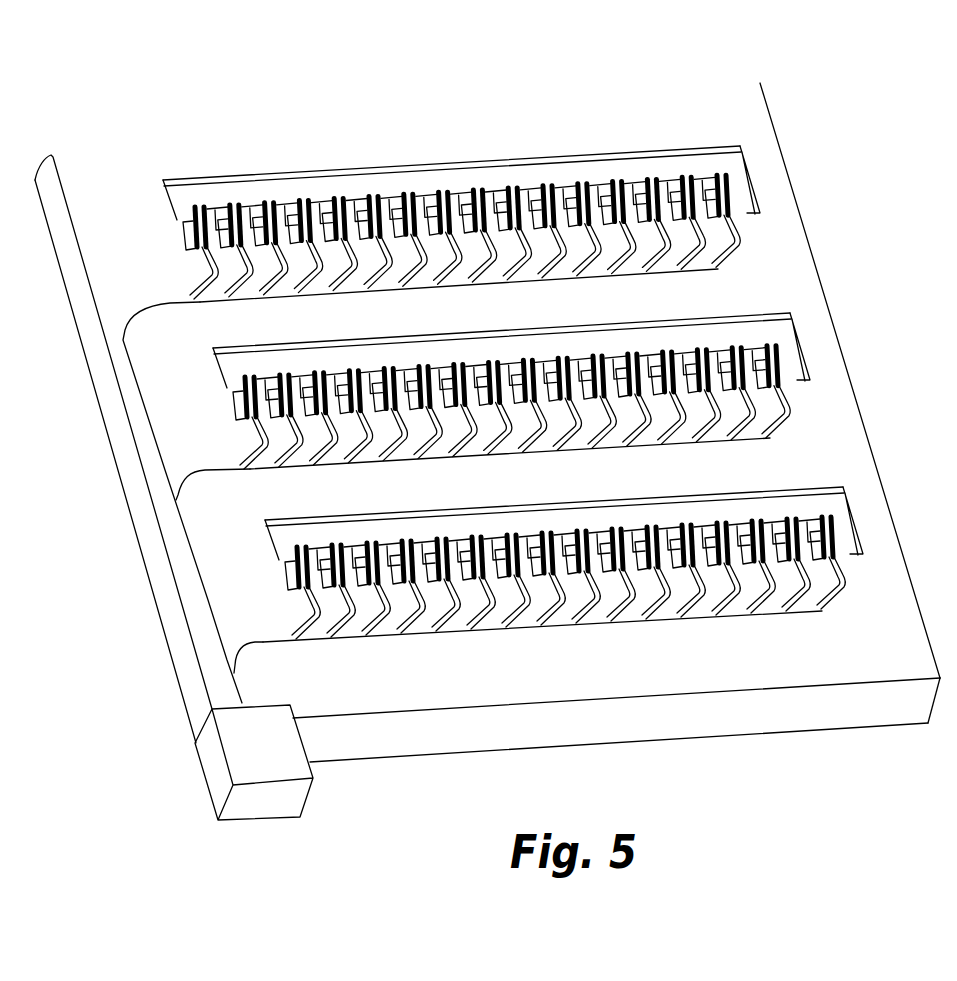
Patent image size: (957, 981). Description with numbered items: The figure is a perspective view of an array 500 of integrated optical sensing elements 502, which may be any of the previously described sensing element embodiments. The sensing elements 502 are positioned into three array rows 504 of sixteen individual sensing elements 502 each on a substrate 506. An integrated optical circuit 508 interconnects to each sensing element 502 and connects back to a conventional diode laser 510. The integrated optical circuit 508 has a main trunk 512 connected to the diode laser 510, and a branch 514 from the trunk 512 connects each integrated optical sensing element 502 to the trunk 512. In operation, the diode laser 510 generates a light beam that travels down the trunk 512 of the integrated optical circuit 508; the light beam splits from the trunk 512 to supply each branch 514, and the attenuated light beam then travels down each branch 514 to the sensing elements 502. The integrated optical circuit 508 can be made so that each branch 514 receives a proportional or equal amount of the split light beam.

The array 500 is at (678, 78).
The integrated optical sensing element 502 is at (328, 200).
The array row 504 is at (288, 562).
The substrate 506 is at (825, 493).
The integrated optical circuit 508 is at (208, 645).
The diode laser 510 is at (204, 776).
The main trunk 512 is at (238, 696).
The branch 514 is at (358, 612).